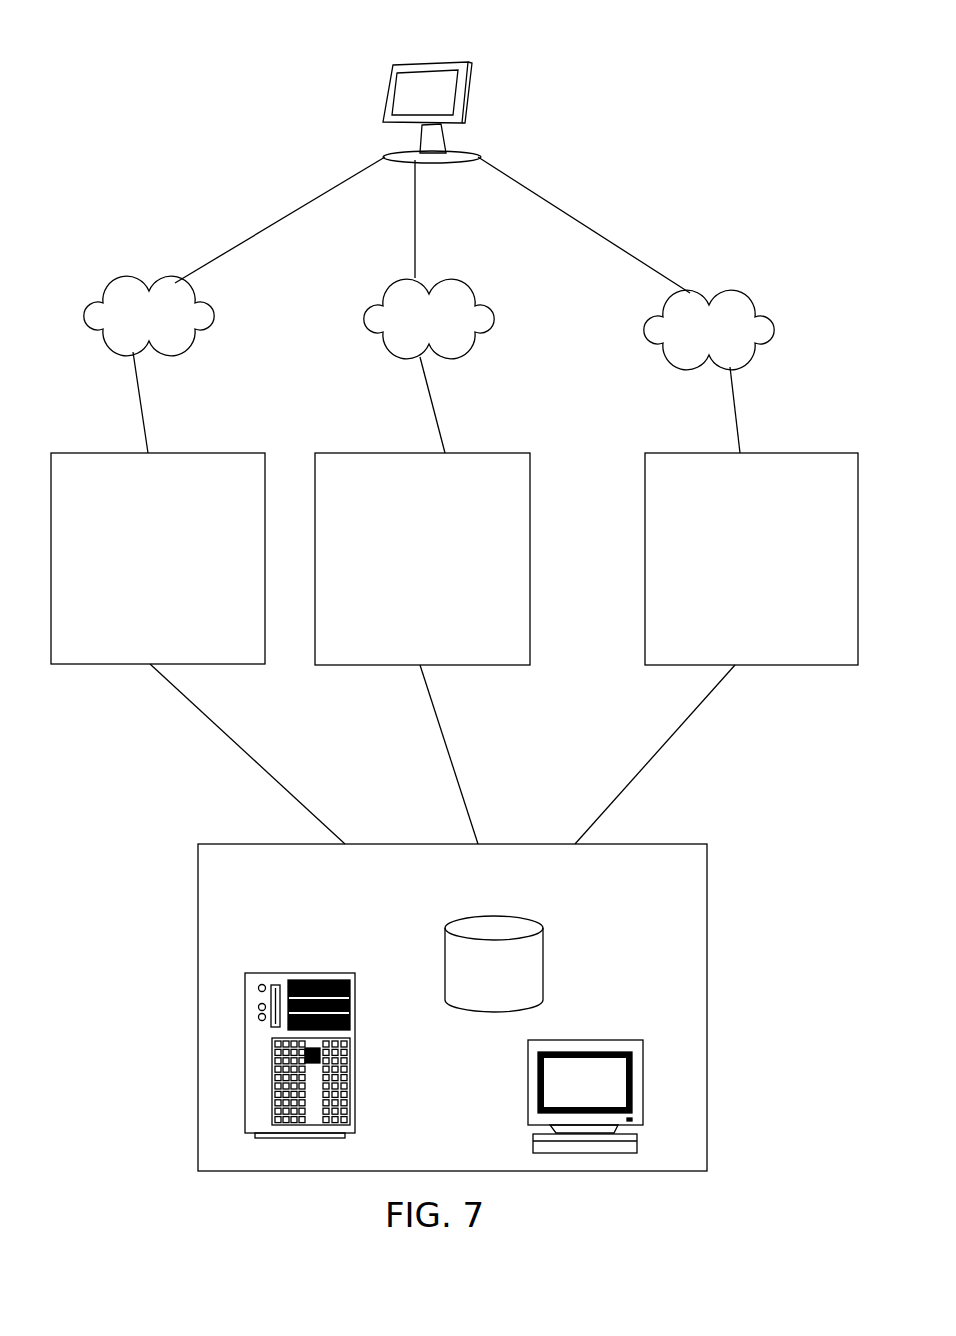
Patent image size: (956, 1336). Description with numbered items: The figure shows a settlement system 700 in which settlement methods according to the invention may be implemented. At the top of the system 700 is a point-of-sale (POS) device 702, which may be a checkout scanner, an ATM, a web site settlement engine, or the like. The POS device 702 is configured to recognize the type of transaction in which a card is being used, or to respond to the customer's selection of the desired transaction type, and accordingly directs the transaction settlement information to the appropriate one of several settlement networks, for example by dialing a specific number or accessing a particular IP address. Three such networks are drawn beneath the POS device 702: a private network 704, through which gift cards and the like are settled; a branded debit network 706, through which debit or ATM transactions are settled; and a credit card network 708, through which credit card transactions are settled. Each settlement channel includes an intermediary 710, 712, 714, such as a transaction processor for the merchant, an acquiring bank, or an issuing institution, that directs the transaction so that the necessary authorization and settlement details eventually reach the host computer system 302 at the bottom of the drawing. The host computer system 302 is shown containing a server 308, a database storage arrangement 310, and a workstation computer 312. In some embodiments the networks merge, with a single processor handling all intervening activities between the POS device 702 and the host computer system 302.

The system 700 is at (168, 58).
The point-of-sale (POS) device 702 is at (470, 88).
The private network 704 is at (217, 312).
The branded debit network 706 is at (529, 311).
The credit card network 708 is at (809, 322).
The intermediary 710 is at (158, 558).
The intermediary 712 is at (422, 559).
The intermediary 714 is at (751, 559).
The host computer system 302 is at (452, 1007).
The server 308 is at (297, 972).
The database storage arrangement 310 is at (540, 918).
The workstation computer 312 is at (624, 1040).